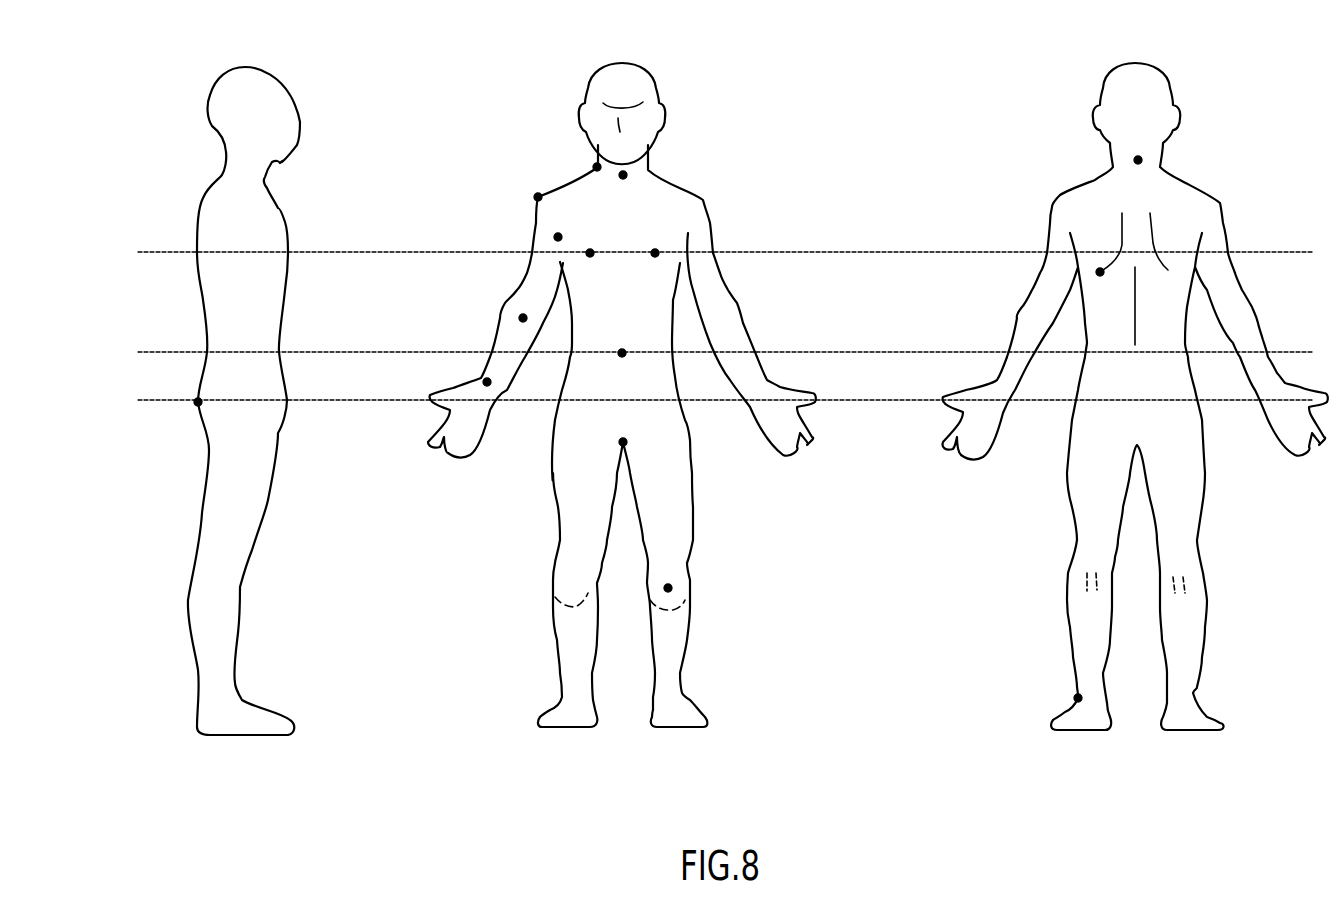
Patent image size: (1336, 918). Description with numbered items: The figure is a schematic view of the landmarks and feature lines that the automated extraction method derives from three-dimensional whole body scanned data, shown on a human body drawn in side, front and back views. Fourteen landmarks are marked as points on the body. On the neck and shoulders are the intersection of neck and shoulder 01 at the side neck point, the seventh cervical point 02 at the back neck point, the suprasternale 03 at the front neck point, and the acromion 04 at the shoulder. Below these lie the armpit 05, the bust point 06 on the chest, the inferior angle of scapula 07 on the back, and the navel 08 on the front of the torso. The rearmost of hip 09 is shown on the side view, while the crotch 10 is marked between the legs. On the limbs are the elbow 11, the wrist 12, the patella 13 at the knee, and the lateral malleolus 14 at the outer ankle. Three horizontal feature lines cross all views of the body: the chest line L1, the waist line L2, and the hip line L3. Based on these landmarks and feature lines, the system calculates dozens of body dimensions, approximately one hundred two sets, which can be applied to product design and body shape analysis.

The intersection of neck and shoulder 01 is at (597, 167).
The seventh cervical point 02 is at (1138, 160).
The suprasternale 03 is at (623, 175).
The acromion 04 is at (538, 197).
The armpit 05 is at (558, 237).
The bust point 06 is at (655, 253).
The inferior angle of scapula 07 is at (1100, 272).
The navel 08 is at (622, 353).
The rearmost of hip 09 is at (198, 402).
The crotch 10 is at (623, 442).
The elbow 11 is at (523, 318).
The wrist 12 is at (487, 382).
The patella 13 is at (668, 588).
The lateral malleolus 14 is at (1078, 698).
The chest line L1 is at (725, 238).
The waist line L2 is at (725, 338).
The hip line L3 is at (725, 386).